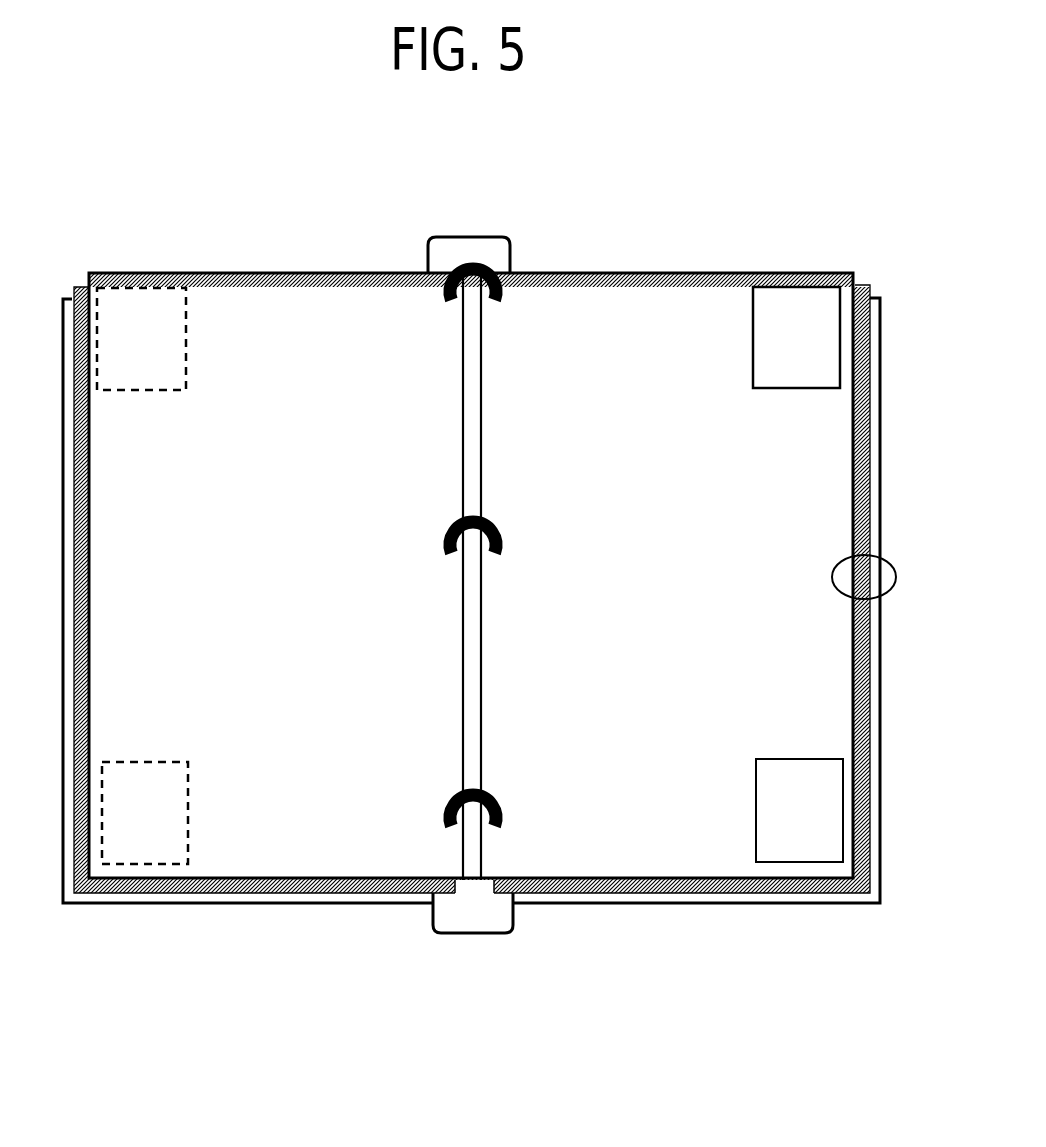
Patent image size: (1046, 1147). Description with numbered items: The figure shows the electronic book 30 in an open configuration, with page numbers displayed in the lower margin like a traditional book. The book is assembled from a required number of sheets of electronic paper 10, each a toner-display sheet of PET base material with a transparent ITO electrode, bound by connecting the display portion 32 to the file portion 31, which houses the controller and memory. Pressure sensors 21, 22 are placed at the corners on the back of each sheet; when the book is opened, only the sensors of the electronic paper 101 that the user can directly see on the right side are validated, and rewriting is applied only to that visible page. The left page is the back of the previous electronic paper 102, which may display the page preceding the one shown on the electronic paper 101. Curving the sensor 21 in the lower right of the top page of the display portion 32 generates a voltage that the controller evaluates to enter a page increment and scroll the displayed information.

The electronic book 30 is at (222, 220).
The display portion 32 is at (668, 257).
The file portion 31 is at (475, 912).
The electronic paper 10 is at (897, 577).
The pressure sensor 22 is at (822, 340).
The pressure sensor 21 is at (825, 797).
The electronic paper (visible right page) 101 is at (658, 576).
The electronic paper (previous page) 102 is at (276, 575).